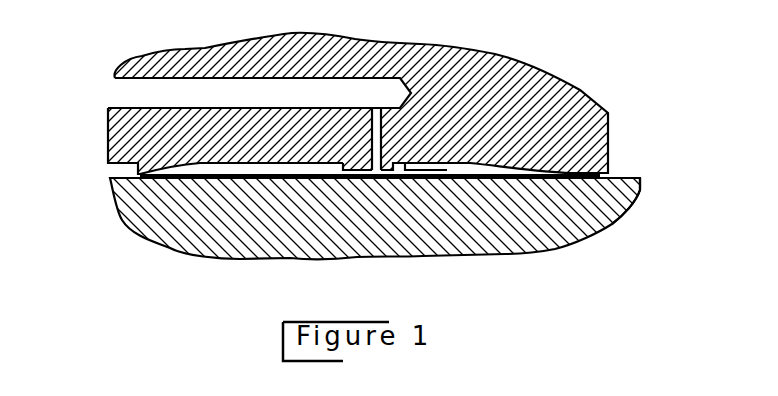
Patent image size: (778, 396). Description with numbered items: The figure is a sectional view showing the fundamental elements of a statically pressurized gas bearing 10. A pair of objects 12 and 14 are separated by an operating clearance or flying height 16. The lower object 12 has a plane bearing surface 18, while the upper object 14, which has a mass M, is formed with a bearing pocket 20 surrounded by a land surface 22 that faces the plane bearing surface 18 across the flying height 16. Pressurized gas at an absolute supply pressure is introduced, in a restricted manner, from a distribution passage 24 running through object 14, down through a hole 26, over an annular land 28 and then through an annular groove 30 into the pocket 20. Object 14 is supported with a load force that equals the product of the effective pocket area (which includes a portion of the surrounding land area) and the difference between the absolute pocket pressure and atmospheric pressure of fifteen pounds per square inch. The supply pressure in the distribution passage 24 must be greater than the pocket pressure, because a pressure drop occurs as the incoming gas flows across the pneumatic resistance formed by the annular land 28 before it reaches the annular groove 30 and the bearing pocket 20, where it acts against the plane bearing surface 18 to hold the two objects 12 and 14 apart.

The statically pressurized gas bearing 10 is at (605, 67).
The object 12 is at (178, 253).
The object 14 is at (207, 50).
The operating clearance or flying height 16 is at (622, 172).
The plane bearing surface 18 is at (140, 175).
The bearing pocket 20 is at (484, 187).
The land surface 22 is at (630, 208).
The distribution passage 24 is at (143, 92).
The hole 26 is at (374, 100).
The annular land 28 is at (354, 176).
The annular groove 30 is at (342, 185).